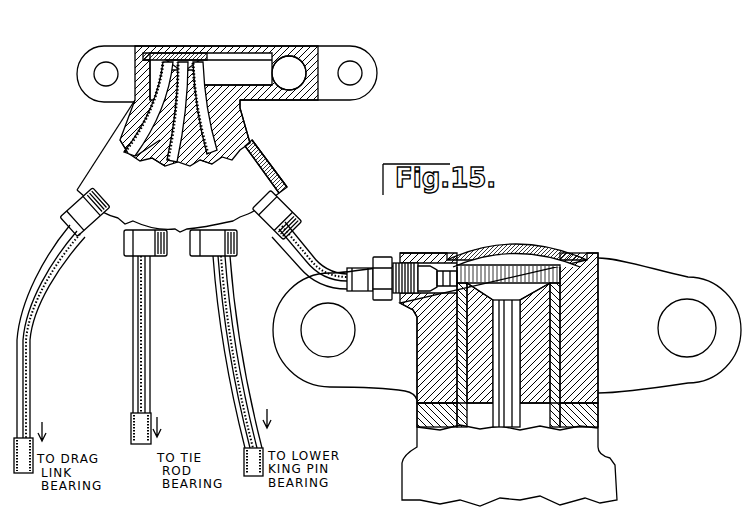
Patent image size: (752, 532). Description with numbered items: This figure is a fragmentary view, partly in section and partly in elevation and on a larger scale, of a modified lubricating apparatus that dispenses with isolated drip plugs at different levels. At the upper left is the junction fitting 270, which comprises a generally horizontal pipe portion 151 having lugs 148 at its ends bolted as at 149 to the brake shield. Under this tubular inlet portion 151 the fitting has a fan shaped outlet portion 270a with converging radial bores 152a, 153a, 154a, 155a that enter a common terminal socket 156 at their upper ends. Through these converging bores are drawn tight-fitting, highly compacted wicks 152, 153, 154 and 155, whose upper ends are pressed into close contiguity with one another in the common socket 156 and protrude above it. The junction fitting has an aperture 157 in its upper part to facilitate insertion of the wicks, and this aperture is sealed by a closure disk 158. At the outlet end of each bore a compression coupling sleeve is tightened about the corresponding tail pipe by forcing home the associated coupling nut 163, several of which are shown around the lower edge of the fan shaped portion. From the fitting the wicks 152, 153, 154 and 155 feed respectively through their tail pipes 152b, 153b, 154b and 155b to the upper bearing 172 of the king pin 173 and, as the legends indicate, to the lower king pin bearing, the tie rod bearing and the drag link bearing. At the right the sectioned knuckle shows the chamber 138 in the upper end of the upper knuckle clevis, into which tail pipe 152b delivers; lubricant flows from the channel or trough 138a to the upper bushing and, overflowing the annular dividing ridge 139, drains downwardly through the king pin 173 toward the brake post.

The lugs 148 is at (107, 48).
The bolts 149 is at (93, 78).
The horizontal pipe portion 151 is at (249, 46).
The wick 152 is at (203, 84).
The converging radial bore 152a is at (246, 141).
The tail pipe 152b is at (310, 247).
The wick 153 is at (202, 159).
The converging radial bore 153a is at (196, 163).
The tail pipe 153b is at (228, 318).
The wick 154 is at (172, 143).
The converging radial bore 154a is at (156, 164).
The tail pipe 154b is at (146, 355).
The wick 155 is at (143, 152).
The converging radial bore 155a is at (122, 142).
The tail pipe 155b is at (33, 327).
The common terminal socket 156 is at (150, 131).
The aperture 157 is at (206, 60).
The closure disk 158 is at (184, 47).
The coupling nut 163 is at (68, 204).
The junction fitting 270 is at (236, 108).
The fan shaped outlet portion 270a is at (284, 187).
The chamber 138 is at (524, 270).
The channel or trough 138a is at (604, 258).
The annular dividing ridge 139 is at (418, 330).
The upper bearing 172 is at (560, 295).
The king pin 173 is at (535, 328).